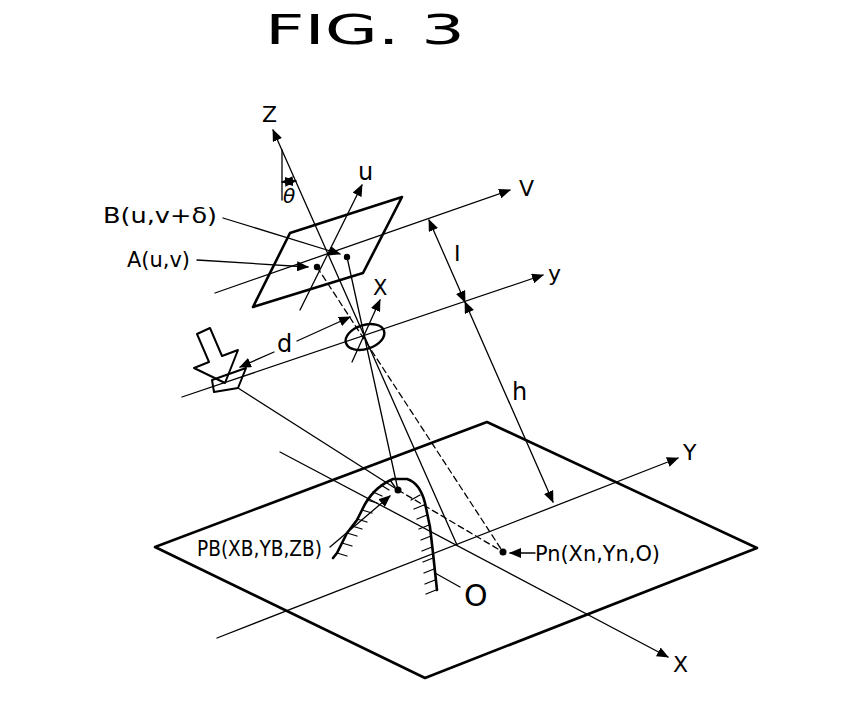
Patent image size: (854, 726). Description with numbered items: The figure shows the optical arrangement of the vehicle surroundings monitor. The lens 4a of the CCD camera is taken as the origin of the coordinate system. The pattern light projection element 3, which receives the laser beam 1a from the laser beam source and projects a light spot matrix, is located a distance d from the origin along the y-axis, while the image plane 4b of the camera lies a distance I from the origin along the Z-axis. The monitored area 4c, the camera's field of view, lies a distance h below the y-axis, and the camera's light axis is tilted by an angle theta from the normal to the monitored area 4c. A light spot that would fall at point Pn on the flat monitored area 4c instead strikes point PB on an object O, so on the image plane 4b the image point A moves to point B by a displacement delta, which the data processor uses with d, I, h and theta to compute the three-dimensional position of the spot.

The laser beam 1a is at (199, 362).
The pattern light projection element 3 is at (220, 392).
The lens 4a is at (384, 339).
The image plane 4b is at (391, 204).
The monitored area 4c is at (687, 523).